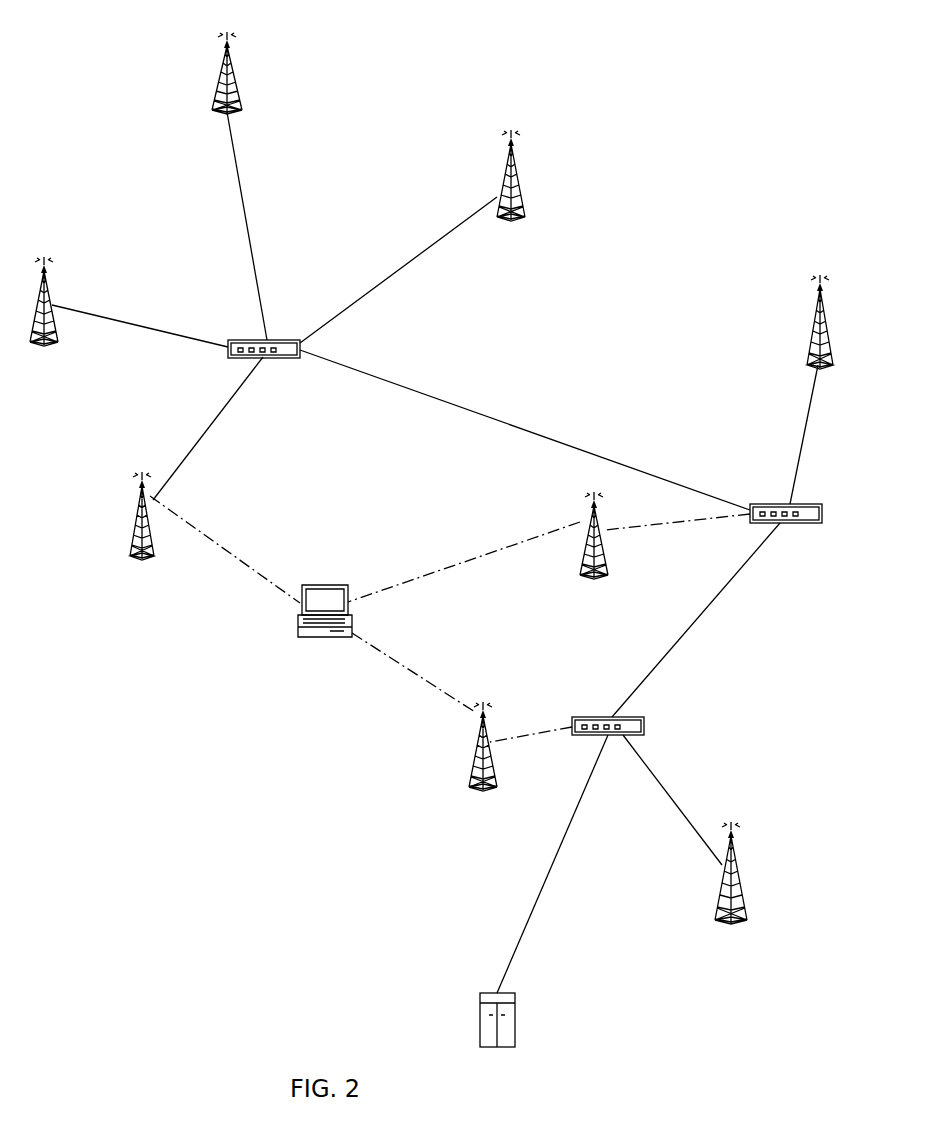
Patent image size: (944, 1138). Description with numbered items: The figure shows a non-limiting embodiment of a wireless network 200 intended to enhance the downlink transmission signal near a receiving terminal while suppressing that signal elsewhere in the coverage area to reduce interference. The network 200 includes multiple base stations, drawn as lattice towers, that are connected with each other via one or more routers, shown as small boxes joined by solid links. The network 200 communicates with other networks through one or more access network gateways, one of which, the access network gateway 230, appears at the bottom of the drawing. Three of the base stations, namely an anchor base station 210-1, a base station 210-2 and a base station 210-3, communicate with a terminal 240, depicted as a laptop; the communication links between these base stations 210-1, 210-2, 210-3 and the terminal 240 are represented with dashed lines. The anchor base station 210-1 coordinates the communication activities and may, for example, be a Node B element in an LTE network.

The wireless network 200 is at (652, 100).
The anchor base station 210-1 is at (130, 517).
The base station 210-2 is at (583, 508).
The base station 210-3 is at (490, 712).
The access network gateway 230 is at (517, 1010).
The terminal 240 is at (322, 584).